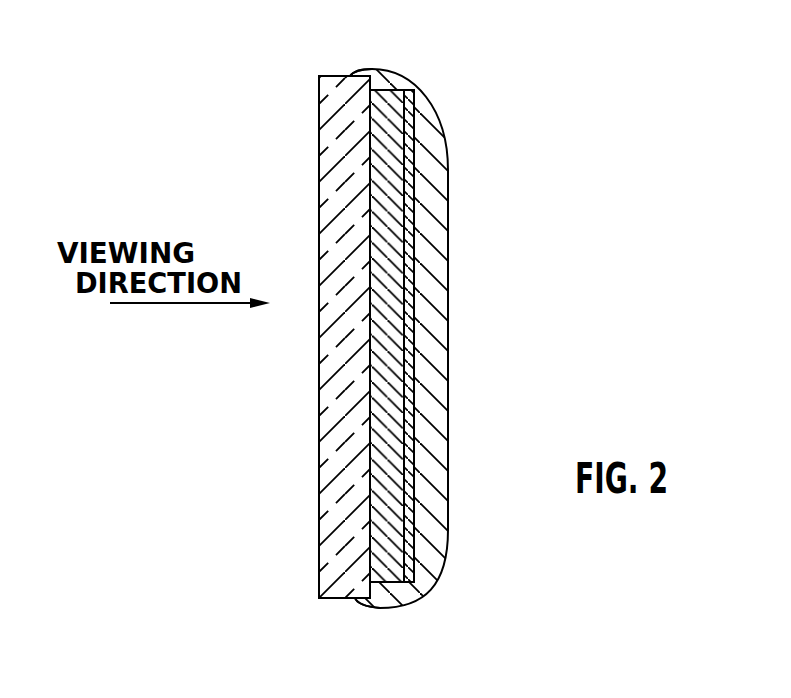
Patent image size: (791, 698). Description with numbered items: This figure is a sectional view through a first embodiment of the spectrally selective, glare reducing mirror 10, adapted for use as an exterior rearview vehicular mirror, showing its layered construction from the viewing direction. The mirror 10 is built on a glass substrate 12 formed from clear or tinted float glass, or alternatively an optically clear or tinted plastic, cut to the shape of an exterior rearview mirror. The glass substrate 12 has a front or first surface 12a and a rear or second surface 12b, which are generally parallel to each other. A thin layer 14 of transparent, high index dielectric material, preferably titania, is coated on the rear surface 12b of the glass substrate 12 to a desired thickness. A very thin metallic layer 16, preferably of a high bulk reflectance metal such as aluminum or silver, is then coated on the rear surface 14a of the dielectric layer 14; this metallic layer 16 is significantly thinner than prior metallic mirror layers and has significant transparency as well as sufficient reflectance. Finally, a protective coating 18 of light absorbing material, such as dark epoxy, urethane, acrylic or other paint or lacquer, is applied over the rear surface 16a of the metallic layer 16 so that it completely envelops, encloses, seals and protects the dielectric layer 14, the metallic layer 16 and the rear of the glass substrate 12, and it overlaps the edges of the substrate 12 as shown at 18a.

The mirror 10 is at (590, 66).
The glass substrate 12 is at (320, 153).
The front surface 12a is at (320, 375).
The rear surface 12b is at (372, 290).
The dielectric layer 14 is at (390, 210).
The rear surface of dielectric layer 14a is at (405, 332).
The metallic layer 16 is at (407, 245).
The rear surface of metallic layer 16a is at (415, 380).
The protective coating 18 is at (427, 142).
The overlapping edge portion of protective coating 18a is at (368, 70).